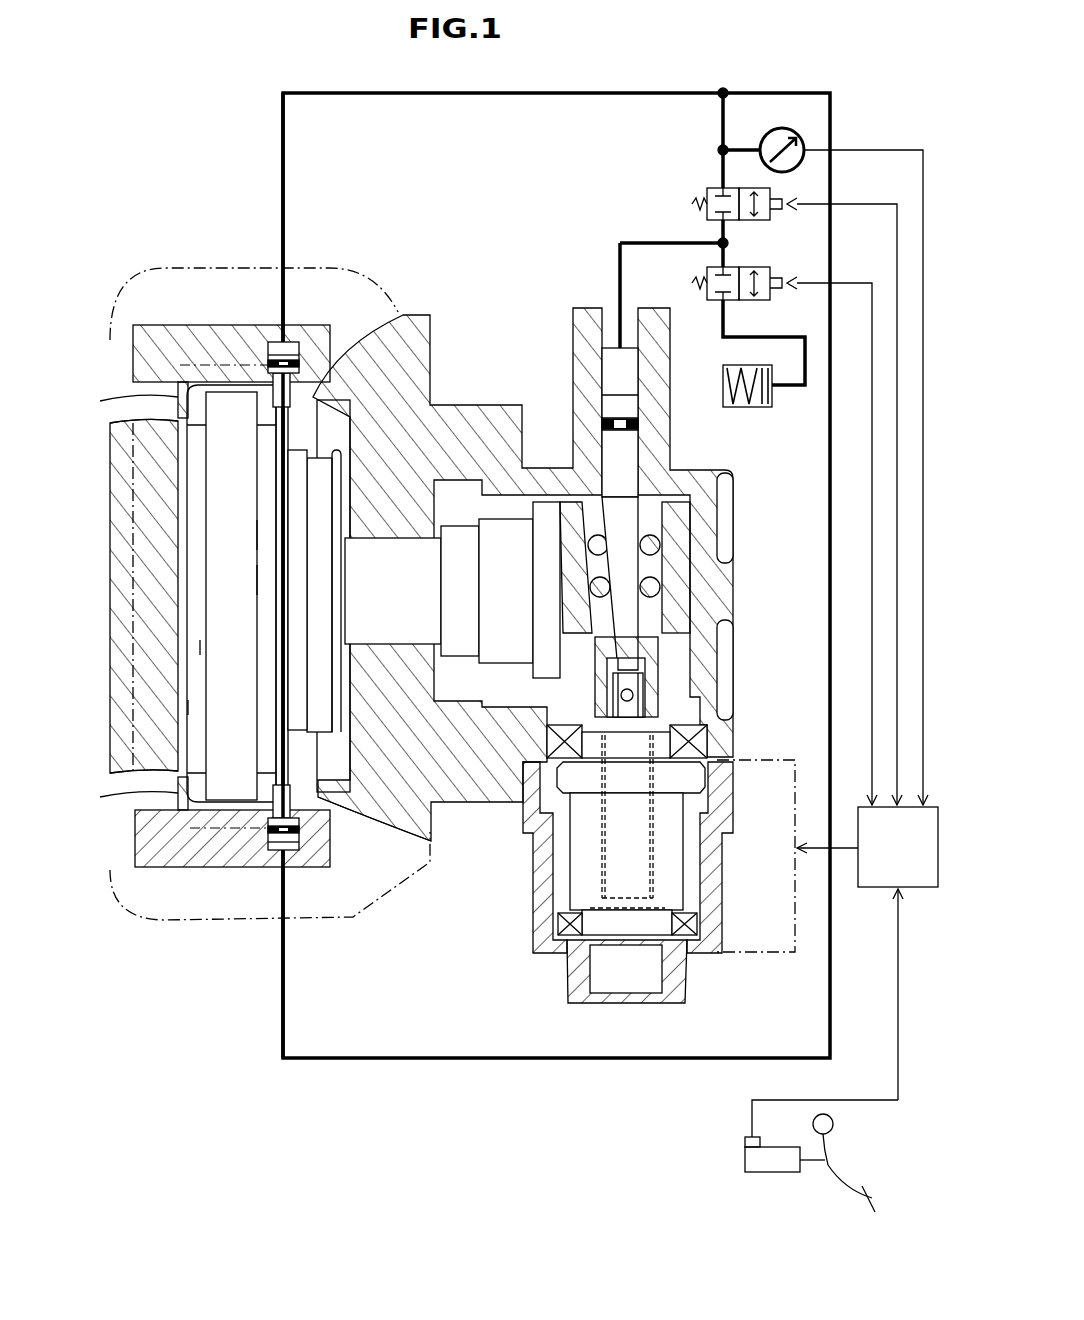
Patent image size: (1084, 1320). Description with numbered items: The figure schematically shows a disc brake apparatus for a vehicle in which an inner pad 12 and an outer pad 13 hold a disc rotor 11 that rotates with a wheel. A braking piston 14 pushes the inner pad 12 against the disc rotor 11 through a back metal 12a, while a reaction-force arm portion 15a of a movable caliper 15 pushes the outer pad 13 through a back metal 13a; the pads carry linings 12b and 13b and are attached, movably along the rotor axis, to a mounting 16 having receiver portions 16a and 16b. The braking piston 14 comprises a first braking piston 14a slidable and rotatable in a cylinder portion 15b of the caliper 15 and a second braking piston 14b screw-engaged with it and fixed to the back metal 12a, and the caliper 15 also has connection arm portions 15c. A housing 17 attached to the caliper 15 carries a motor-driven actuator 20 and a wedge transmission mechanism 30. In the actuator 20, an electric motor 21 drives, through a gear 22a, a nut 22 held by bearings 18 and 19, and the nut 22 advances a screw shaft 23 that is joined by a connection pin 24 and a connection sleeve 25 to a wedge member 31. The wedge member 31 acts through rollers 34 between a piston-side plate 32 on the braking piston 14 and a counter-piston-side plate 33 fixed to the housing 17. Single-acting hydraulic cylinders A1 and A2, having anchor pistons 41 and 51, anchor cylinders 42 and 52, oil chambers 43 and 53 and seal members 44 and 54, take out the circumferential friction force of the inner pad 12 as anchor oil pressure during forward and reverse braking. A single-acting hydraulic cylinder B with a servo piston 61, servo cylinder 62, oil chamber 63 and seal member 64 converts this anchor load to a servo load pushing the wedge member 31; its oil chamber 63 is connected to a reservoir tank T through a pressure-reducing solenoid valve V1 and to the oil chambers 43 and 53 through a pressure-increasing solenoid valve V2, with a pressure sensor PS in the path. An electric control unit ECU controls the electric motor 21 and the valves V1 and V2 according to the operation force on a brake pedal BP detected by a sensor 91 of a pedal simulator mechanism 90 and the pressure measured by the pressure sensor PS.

The disc rotor 11 is at (216, 845).
The inner pad 12 is at (265, 479).
The back metal 12a is at (280, 535).
The lining 12b is at (268, 582).
The outer pad 13 is at (215, 745).
The back metal 13a is at (190, 706).
The lining 13b is at (200, 645).
The braking piston 14 is at (458, 522).
The first braking piston 14a is at (500, 528).
The second braking piston 14b is at (320, 457).
The movable caliper 15 is at (410, 318).
The reaction-force arm portion 15a is at (130, 663).
The cylinder portion 15b is at (405, 652).
The connection arm portion 15c is at (340, 925).
The mounting 16 is at (197, 325).
The receiver portion 16a is at (178, 394).
The receiver portion 16b is at (180, 800).
The housing 17 is at (702, 470).
The bearing 18 is at (700, 742).
The bearing 19 is at (556, 921).
The motor-driven actuator 20 is at (720, 957).
The electric motor 21 is at (775, 955).
The nut 22 is at (590, 866).
The gear 22a is at (707, 780).
The screw shaft 23 is at (640, 718).
The connection pin 24 is at (652, 690).
The connection sleeve 25 is at (596, 690).
The wedge transmission mechanism 30 is at (652, 490).
The wedge member 31 is at (624, 572).
The piston-side plate 32 is at (572, 572).
The counter-piston-side plate 33 is at (678, 560).
The roller 34 is at (662, 592).
The anchor piston 41 is at (278, 396).
The anchor cylinder 42 is at (303, 348).
The oil chamber 43 is at (273, 342).
The seal member 44 is at (300, 364).
The anchor piston 51 is at (268, 802).
The anchor cylinder 52 is at (300, 845).
The oil chamber 53 is at (290, 850).
The seal member 54 is at (300, 829).
The servo piston 61 is at (620, 440).
The servo cylinder 62 is at (602, 418).
The oil chamber 63 is at (606, 372).
The seal member 64 is at (640, 424).
The pedal simulator mechanism 90 is at (775, 1172).
The sensor 91 is at (745, 1143).
The single-acting hydraulic cylinder A1 is at (292, 335).
The single-acting hydraulic cylinder A2 is at (270, 858).
The single-acting hydraulic cylinder B is at (648, 388).
The pressure sensor PS is at (805, 138).
The pressure-reducing solenoid valve V1 is at (752, 302).
The pressure-increasing solenoid valve V2 is at (752, 222).
The reservoir tank T is at (768, 407).
The electric control unit ECU is at (867, 953).
The brake pedal BP is at (872, 1203).